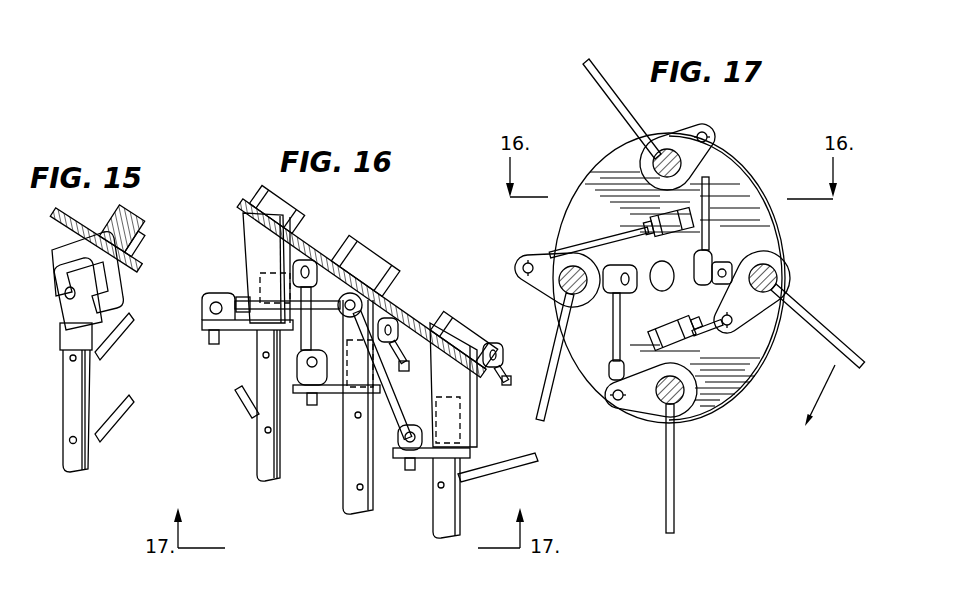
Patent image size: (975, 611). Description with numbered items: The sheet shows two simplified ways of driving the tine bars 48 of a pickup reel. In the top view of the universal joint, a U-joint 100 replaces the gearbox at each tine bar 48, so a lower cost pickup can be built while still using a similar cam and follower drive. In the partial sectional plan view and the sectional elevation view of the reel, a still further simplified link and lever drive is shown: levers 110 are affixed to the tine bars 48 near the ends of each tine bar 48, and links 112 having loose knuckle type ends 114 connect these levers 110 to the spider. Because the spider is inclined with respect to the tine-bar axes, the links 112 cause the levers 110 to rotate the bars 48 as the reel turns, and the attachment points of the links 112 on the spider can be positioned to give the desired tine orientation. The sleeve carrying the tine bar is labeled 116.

In FIG. 15, the tine bar 48 is at (112, 389).
In FIG. 16, the tine bar 48 is at (238, 420).
In FIG. 15, the universal joint 100 is at (144, 286).
In FIG. 16, the lever 110 is at (238, 325).
In FIG. 17, the lever 110 is at (636, 407).
In FIG. 16, the link 112 is at (272, 299).
In FIG. 17, the link 112 is at (614, 332).
In FIG. 16, the knuckle type end 114 is at (214, 291).
In FIG. 17, the knuckle type end 114 is at (604, 381).
In FIG. 16, the tube sleeve 116 is at (250, 240).